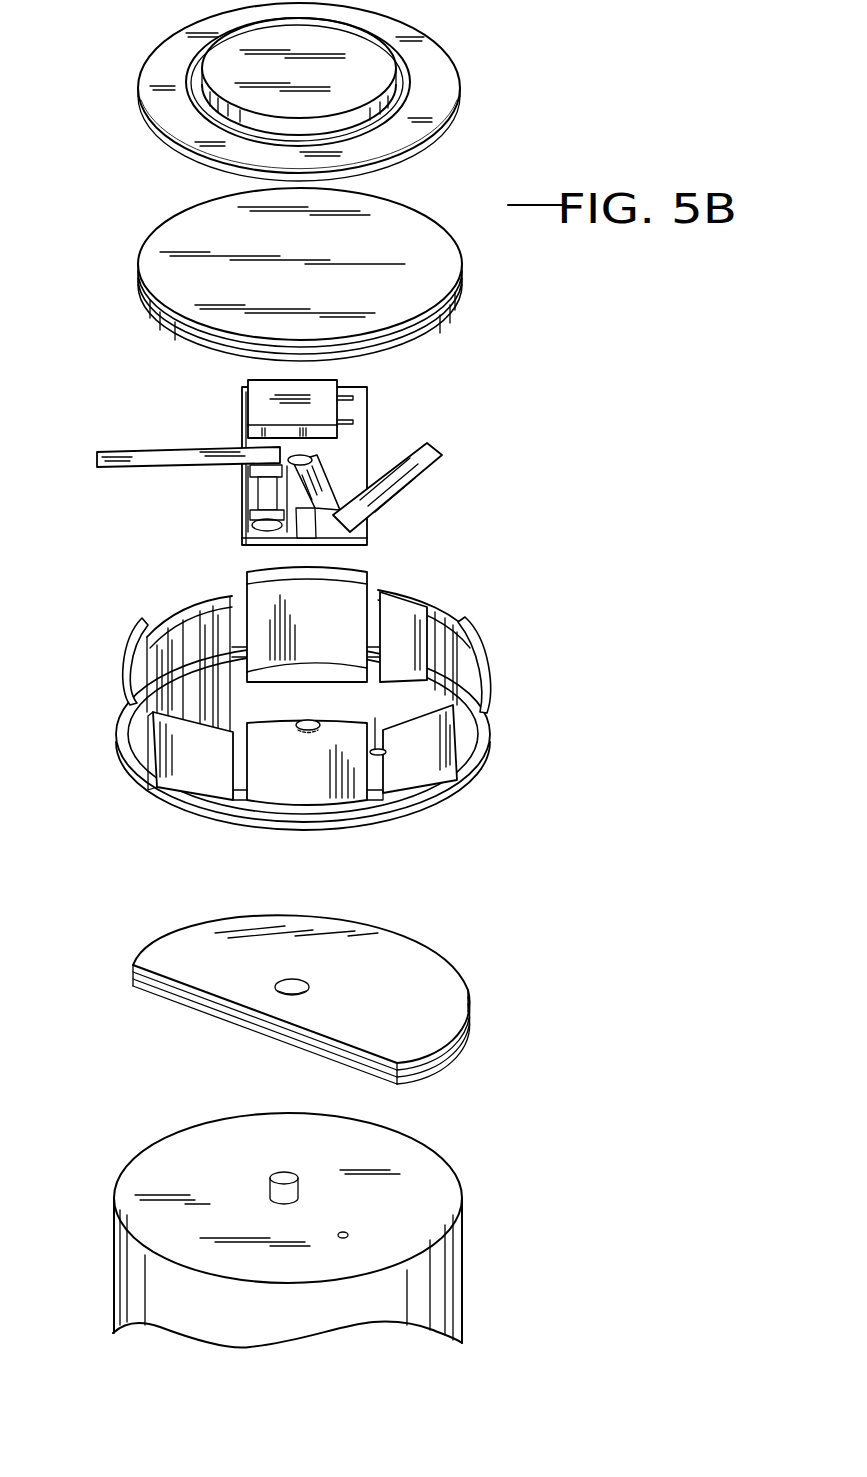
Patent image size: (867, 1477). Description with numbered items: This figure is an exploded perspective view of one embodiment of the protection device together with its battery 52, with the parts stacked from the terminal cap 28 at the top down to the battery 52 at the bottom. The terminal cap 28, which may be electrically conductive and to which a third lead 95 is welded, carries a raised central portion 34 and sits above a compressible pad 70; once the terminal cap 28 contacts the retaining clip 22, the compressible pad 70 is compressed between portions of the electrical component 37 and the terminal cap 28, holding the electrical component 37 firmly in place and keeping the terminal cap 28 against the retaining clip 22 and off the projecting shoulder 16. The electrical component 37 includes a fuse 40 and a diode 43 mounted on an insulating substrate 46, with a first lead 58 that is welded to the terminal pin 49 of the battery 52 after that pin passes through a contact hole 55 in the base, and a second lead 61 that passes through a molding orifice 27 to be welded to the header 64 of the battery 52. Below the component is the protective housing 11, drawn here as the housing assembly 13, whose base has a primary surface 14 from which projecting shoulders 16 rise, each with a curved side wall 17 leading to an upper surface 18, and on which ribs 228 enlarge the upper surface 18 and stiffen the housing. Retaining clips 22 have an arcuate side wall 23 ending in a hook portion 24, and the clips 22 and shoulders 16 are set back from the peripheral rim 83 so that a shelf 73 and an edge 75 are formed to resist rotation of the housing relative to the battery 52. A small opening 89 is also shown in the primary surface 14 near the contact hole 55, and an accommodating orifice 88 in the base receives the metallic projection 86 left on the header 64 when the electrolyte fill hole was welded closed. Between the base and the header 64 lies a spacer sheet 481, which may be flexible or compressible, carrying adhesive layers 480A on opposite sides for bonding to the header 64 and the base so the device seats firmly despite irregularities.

The push button 34 is at (432, 55).
The terminal cap 28 is at (460, 77).
The compressible pad 70 is at (300, 274).
The electrical component 37 is at (385, 406).
The diode 43 is at (265, 395).
The insulating substrate 46 is at (368, 395).
The third lead 95 is at (178, 455).
The fuse 40 is at (265, 498).
The first lead 58 is at (320, 460).
The second lead 61 is at (437, 452).
The base 13 is at (314, 695).
The primary surface 14 is at (329, 752).
The edge 75 is at (435, 800).
The shelf 73 is at (490, 713).
The peripheral rim 83 is at (193, 808).
The upper surface 18 is at (197, 608).
The curved side wall 17 is at (233, 613).
The retaining clip 22 is at (75, 692).
The projecting shoulder 16 is at (127, 555).
The hook portion 24 is at (145, 623).
The arcuate side wall 23 is at (343, 593).
The molding orifice 27 is at (270, 678).
The rib 228 is at (190, 694).
The post 89 is at (298, 705).
The contact hole 55 is at (320, 722).
The accommodating orifice 88 is at (378, 720).
The protective housing 11 is at (485, 633).
The adhesive layer 480A is at (352, 1007).
The spacer sheet 481 is at (427, 1042).
The battery 52 is at (256, 1230).
The header 64 is at (138, 1180).
The terminal pin 49 is at (293, 1172).
The metallic projection 86 is at (350, 1233).